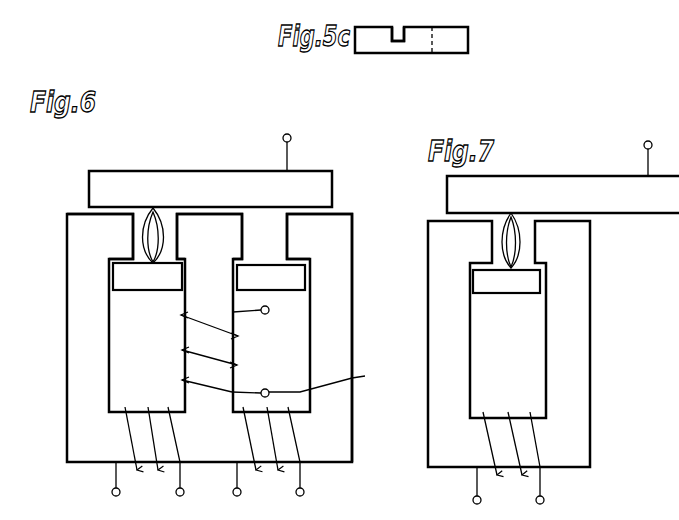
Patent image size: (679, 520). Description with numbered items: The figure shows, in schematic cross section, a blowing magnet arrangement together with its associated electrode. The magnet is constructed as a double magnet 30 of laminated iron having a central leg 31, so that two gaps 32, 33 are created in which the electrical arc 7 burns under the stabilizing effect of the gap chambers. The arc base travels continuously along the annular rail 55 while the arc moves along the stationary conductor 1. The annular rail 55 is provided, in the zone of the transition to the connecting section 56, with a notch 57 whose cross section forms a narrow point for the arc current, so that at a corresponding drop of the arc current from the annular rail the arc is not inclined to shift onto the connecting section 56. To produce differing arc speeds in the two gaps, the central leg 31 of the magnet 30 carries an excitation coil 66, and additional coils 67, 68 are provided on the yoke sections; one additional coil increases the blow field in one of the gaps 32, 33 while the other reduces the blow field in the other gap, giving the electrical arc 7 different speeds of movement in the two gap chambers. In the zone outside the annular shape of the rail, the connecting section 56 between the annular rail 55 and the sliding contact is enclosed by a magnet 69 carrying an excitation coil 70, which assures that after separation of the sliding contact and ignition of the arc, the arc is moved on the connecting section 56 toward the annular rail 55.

In FIG. 6, the stationary conductor 1 is at (313, 183).
In FIG. 7, the stationary conductor 1 is at (598, 189).
In FIG. 6, the electrical arc 7 is at (157, 210).
In FIG. 7, the electrical arc 7 is at (523, 212).
In FIG. 6, the double magnet 30 is at (81, 360).
In FIG. 6, the central leg 31 is at (205, 290).
In FIG. 6, the gap 32 is at (277, 238).
In FIG. 6, the gap 33 is at (134, 241).
In FIG. 6, the annular rail 55 is at (130, 276).
In FIG. 7, the connecting section 56 is at (533, 281).
In FIG. 5C, the notch 57 is at (399, 45).
In FIG. 6, the excitation coil 66 is at (285, 377).
In FIG. 6, the additional coil 67 is at (112, 491).
In FIG. 6, the additional coil 68 is at (241, 491).
In FIG. 7, the magnet 69 is at (575, 338).
In FIG. 7, the excitation coil 70 is at (473, 499).